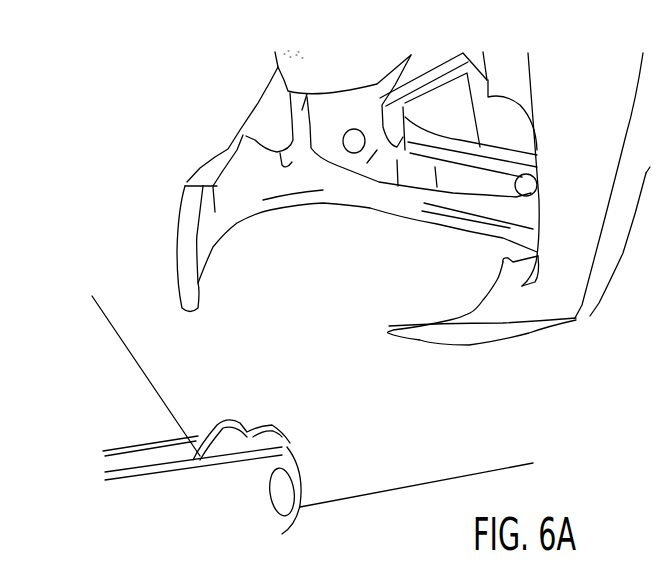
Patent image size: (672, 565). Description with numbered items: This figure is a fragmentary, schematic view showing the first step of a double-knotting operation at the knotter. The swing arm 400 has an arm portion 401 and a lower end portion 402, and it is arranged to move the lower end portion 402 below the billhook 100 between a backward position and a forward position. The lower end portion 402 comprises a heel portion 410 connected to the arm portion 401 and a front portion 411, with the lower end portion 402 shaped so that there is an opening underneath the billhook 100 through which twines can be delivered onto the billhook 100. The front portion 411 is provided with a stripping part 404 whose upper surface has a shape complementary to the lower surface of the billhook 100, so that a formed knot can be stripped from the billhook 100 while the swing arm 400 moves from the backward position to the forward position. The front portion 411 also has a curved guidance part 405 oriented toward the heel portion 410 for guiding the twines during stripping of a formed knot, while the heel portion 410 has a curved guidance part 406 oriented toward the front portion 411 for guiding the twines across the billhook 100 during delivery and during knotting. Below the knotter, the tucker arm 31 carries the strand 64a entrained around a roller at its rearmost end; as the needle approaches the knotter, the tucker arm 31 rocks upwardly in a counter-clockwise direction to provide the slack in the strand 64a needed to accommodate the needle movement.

The billhook 100 is at (493, 69).
The swing arm 400 is at (571, 95).
The arm portion 401 is at (596, 160).
The lower end portion 402 is at (125, 281).
The stripping part 404 is at (221, 137).
The curved guidance part 405 is at (248, 242).
The curved guidance part 406 is at (477, 320).
The heel portion 410 is at (527, 313).
The front portion 411 is at (185, 186).
The strand 64a is at (418, 483).
The tucker arm 31 is at (232, 486).